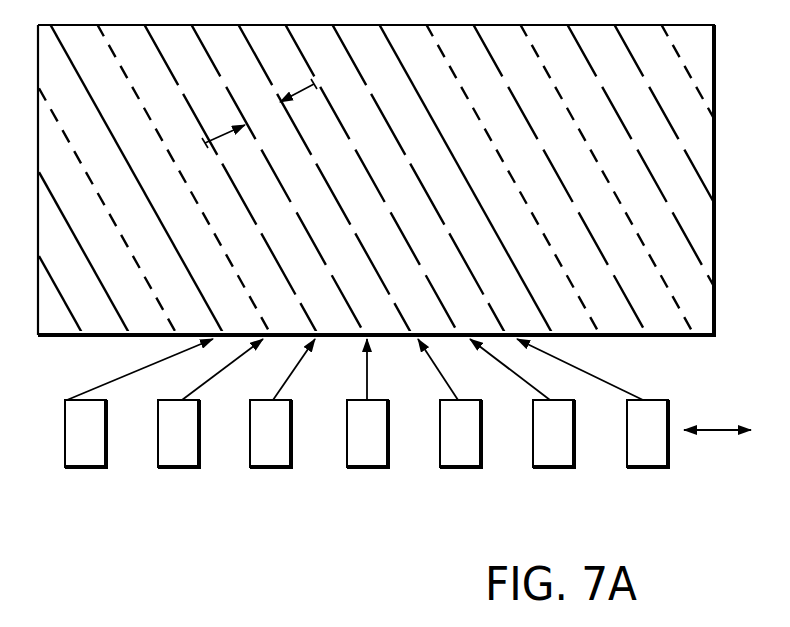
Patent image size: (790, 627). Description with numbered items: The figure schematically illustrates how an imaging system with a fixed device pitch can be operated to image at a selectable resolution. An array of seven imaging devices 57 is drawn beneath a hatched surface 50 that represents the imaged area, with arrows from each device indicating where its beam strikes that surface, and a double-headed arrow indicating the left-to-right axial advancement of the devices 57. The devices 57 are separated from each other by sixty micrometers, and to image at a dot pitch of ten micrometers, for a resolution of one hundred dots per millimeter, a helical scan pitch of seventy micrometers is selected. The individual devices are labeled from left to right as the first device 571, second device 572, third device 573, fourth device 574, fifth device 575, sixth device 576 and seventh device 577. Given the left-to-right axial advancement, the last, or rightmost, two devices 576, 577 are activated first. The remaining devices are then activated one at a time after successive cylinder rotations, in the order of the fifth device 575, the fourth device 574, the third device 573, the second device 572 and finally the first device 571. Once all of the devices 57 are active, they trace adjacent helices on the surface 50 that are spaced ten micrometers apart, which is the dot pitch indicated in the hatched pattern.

The scanned surface (photosensitive member) 50 is at (693, 131).
The devices 57 is at (355, 430).
The first device 571 is at (66, 448).
The second device 572 is at (158, 450).
The third device 573 is at (291, 452).
The fourth device 574 is at (347, 452).
The fifth device 575 is at (482, 452).
The sixth device 576 is at (533, 452).
The seventh device 577 is at (668, 452).